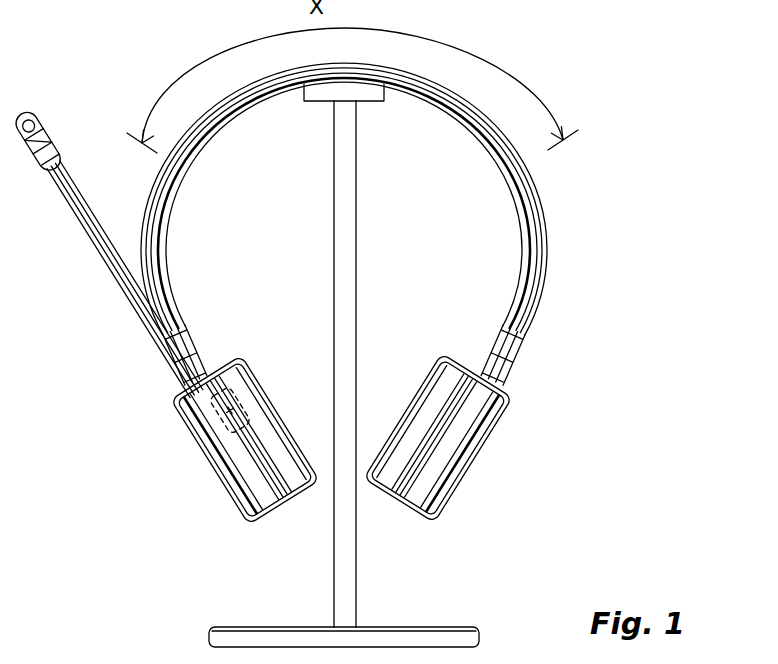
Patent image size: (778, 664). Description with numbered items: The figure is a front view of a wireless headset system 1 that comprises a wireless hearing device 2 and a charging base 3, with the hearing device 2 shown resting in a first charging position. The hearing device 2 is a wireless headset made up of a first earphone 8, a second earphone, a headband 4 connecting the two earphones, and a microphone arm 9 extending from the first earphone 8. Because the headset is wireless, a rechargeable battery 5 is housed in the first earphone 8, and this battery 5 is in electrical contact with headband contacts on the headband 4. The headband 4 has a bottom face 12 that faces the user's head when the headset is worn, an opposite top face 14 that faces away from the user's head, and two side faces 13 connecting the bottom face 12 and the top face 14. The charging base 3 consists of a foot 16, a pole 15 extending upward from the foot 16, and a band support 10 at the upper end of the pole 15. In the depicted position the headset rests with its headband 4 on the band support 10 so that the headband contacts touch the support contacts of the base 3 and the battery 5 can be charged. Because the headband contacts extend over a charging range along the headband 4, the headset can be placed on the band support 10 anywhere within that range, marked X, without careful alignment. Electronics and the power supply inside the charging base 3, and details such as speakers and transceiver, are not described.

The wireless headset system 1 is at (665, 113).
The wireless hearing device 2 is at (492, 415).
The charging base 3 is at (340, 382).
The headband 4 is at (388, 224).
The rechargeable battery 5 is at (197, 428).
The first earphone 8 is at (240, 480).
The microphone arm 9 is at (122, 286).
The band support 10 is at (323, 95).
The bottom face 12 is at (522, 249).
The side faces 13 is at (540, 224).
The top face 14 is at (545, 259).
The pole 15 is at (348, 576).
The foot 16 is at (447, 640).